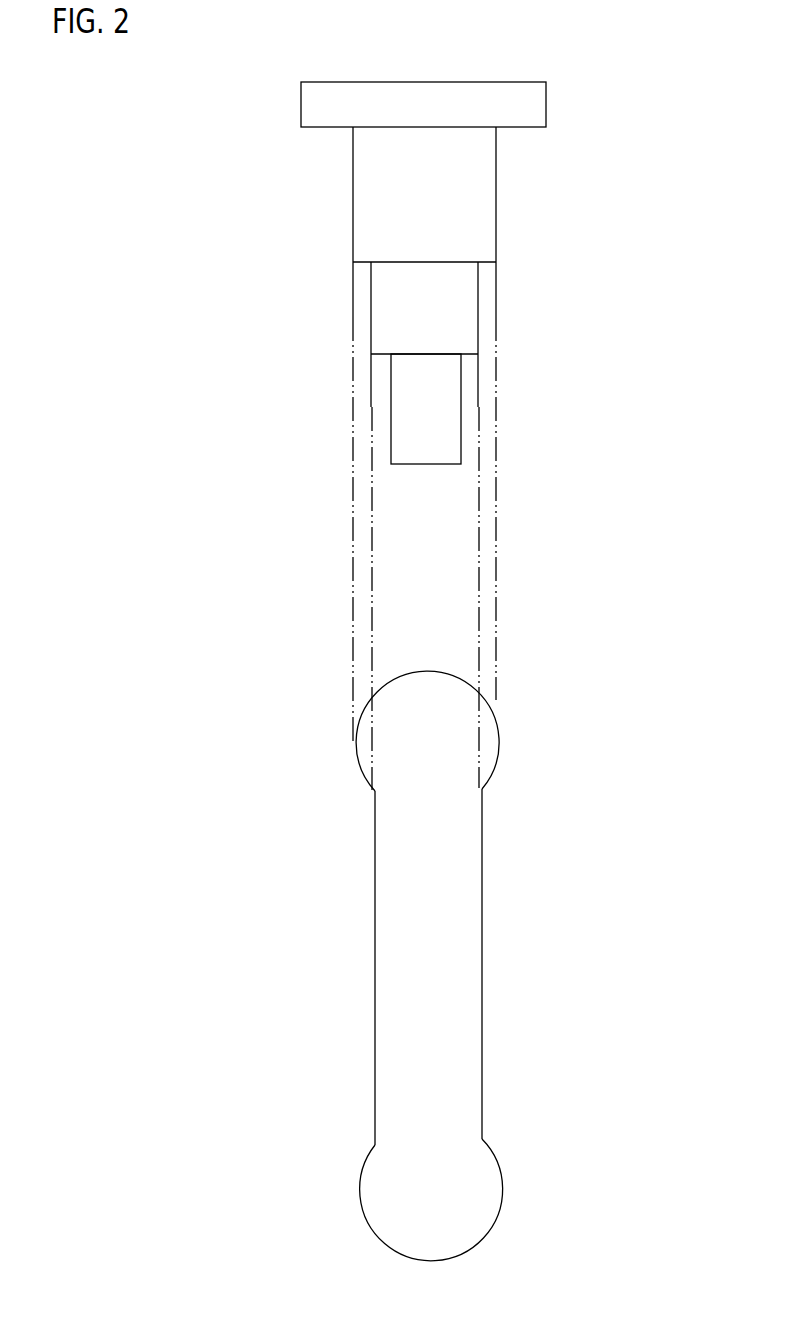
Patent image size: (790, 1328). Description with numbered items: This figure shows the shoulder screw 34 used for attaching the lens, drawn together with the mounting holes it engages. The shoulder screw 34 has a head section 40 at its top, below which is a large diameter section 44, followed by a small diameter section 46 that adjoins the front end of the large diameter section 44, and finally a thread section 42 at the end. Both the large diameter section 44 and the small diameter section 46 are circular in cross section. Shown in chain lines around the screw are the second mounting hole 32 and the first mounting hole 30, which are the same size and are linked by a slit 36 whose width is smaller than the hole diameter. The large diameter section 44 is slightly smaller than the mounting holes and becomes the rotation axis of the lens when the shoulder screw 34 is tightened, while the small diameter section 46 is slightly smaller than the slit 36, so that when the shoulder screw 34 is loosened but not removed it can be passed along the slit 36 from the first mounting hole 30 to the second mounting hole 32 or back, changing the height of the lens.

The shoulder screw 34 is at (565, 76).
The head section 40 is at (300, 100).
The large diameter section 44 is at (390, 200).
The small diameter section 46 is at (408, 316).
The thread section 42 is at (427, 420).
The second mounting hole 32 is at (357, 741).
The slit 36 is at (375, 965).
The first mounting hole 30 is at (361, 1184).